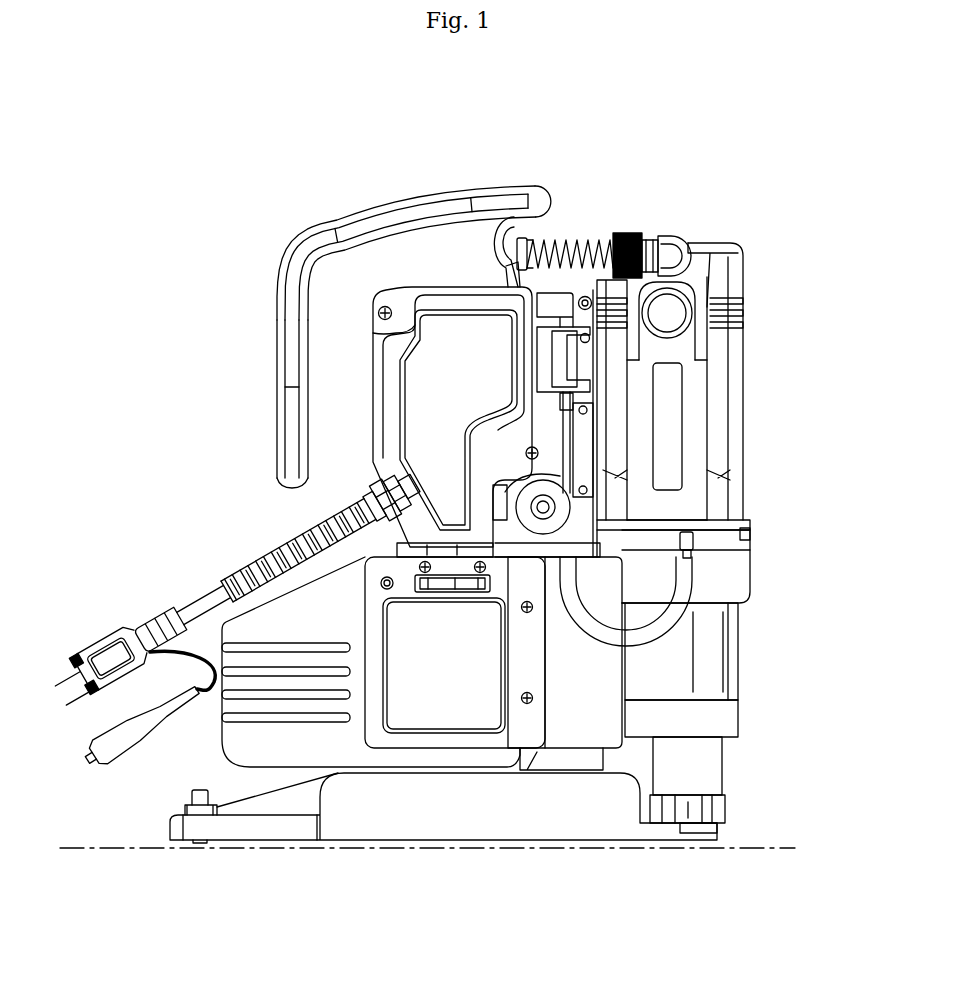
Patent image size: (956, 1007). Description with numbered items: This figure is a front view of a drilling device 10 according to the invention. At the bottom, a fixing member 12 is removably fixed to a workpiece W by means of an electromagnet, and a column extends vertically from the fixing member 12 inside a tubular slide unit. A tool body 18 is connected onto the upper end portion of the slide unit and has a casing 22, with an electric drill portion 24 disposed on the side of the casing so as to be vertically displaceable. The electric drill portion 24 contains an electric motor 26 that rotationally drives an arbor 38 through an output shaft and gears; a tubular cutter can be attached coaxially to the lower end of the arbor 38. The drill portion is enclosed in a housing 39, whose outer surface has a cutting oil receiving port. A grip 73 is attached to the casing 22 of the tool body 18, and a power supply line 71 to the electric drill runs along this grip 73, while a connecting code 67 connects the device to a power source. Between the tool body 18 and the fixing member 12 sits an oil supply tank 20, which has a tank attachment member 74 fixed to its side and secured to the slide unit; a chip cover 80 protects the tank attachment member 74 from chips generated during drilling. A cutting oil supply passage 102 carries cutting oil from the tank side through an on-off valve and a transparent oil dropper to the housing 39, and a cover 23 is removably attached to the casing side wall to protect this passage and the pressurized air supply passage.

The drilling device 10 is at (538, 140).
The fixing member 12 is at (372, 830).
The tool body 18 is at (268, 443).
The oil supply tank 20 is at (245, 620).
The casing 22 is at (375, 325).
The cover 23 is at (427, 392).
The electric drill portion 24 is at (747, 243).
The electric motor 26 is at (700, 413).
The arbor 38 is at (713, 775).
The housing 39 is at (745, 569).
The connecting code 67 is at (157, 630).
The power supply line 71 is at (293, 305).
The grip 73 is at (306, 228).
The tank attachment member 74 is at (442, 742).
The chip cover 80 is at (575, 730).
The cutting oil supply passage 102 is at (660, 628).
The workpiece W is at (776, 842).